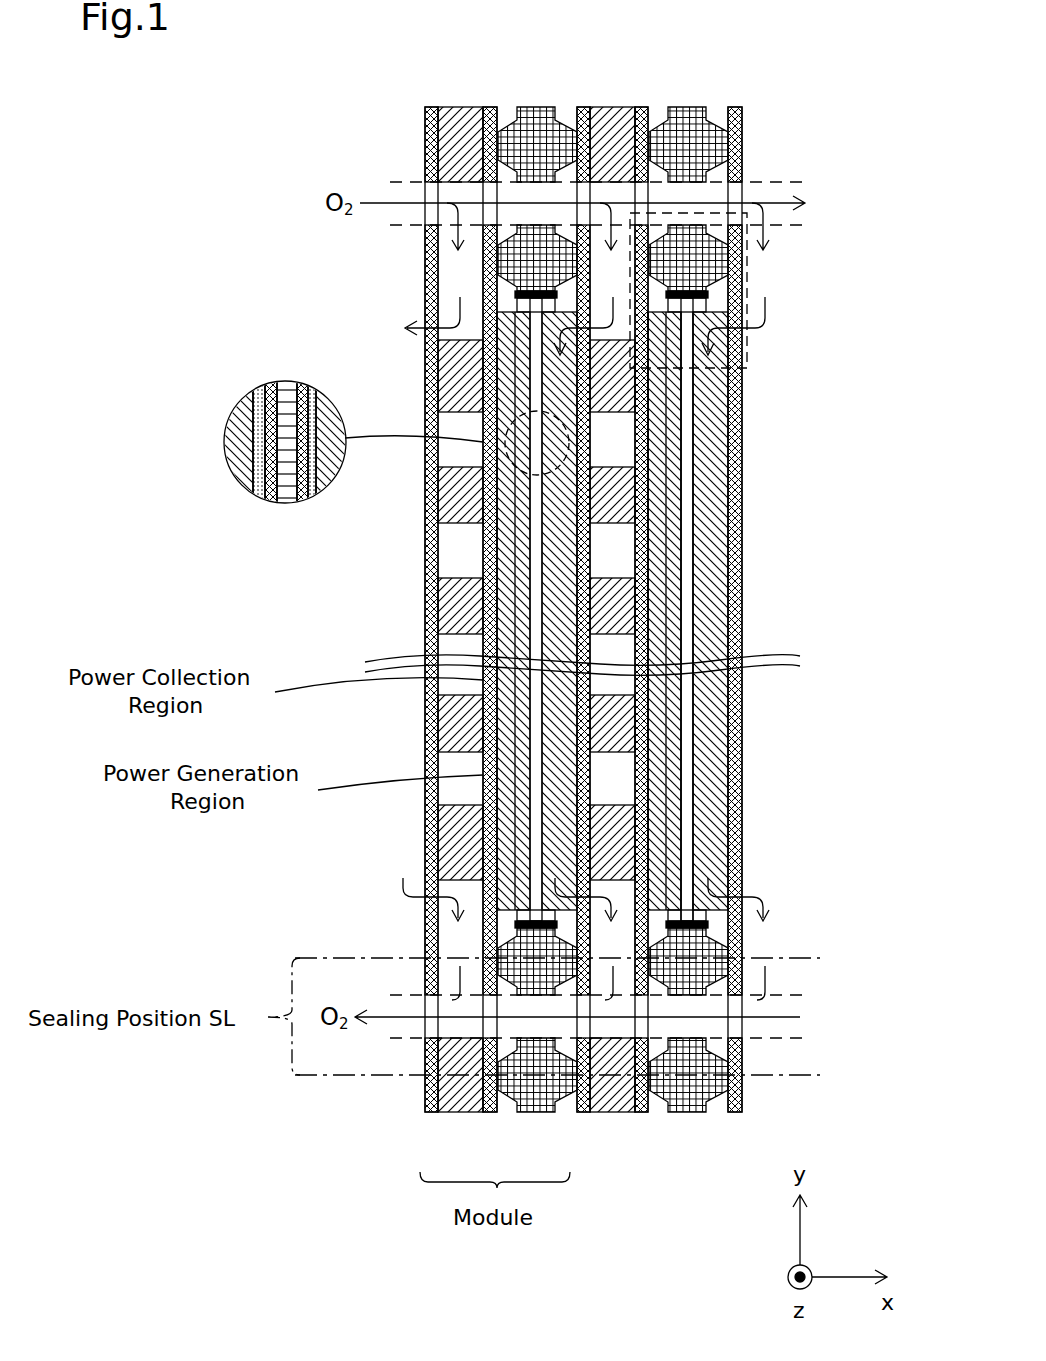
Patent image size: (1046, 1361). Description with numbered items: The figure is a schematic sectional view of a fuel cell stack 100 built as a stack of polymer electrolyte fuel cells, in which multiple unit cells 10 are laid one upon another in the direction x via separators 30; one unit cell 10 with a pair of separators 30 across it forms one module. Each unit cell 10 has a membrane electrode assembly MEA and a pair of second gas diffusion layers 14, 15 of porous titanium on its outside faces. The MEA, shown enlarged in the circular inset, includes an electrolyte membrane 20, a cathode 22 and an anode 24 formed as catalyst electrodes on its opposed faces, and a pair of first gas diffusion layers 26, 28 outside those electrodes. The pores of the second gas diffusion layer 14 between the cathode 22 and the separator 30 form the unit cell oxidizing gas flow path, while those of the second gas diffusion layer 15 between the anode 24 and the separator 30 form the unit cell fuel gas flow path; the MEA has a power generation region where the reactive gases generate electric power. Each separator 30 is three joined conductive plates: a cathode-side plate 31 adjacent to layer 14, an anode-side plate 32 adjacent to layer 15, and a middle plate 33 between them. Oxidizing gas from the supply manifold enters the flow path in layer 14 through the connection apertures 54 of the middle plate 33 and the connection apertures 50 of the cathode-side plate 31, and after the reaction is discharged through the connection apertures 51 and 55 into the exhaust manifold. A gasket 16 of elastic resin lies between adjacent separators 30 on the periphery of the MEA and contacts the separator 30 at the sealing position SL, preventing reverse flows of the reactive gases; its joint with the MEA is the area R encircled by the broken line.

The fuel cell stack 100 is at (258, 147).
The unit cell 10 is at (577, 1127).
The separator 30 is at (490, 1127).
The second gas diffusion layer 14 is at (714, 465).
The second gas diffusion layer 15 is at (667, 513).
The gasket 16 is at (742, 150).
The electrolyte membrane 20 is at (286, 496).
The cathode 22 is at (303, 497).
The anode 24 is at (271, 497).
The first gas diffusion layer 26 is at (312, 497).
The first gas diffusion layer 28 is at (259, 497).
The cathode-side plate 31 is at (650, 572).
The anode-side plate 32 is at (650, 620).
The middle plate 33 is at (690, 757).
The connection aperture 50 is at (425, 341).
The connection aperture 51 is at (425, 905).
The connection aperture 54 is at (472, 287).
The connection aperture 55 is at (472, 956).
The area R is at (747, 358).
The membrane electrode assembly MEA is at (688, 405).